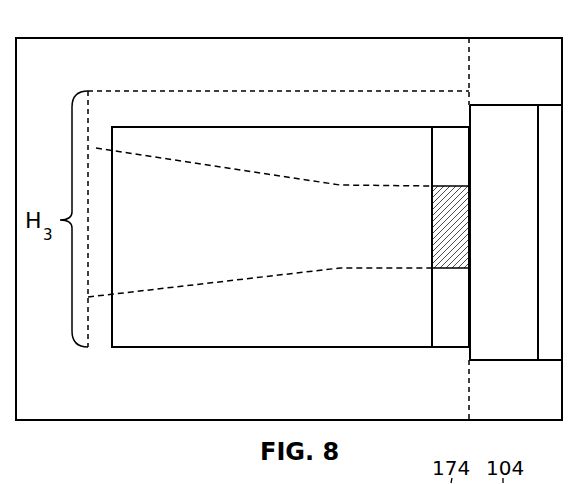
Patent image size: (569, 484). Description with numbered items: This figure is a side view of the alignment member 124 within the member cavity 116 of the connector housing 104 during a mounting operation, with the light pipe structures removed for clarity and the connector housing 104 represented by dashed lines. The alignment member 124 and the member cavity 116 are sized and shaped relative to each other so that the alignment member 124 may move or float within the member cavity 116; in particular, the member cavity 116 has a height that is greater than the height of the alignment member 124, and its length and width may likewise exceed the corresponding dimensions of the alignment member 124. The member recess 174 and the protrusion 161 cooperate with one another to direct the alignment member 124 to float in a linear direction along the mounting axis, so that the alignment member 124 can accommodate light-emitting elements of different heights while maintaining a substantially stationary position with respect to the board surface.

The connector housing 104 is at (470, 77).
The member cavity 116 is at (125, 118).
The alignment member 124 is at (318, 127).
The protrusion 161 is at (454, 230).
The member recess 174 is at (444, 162).